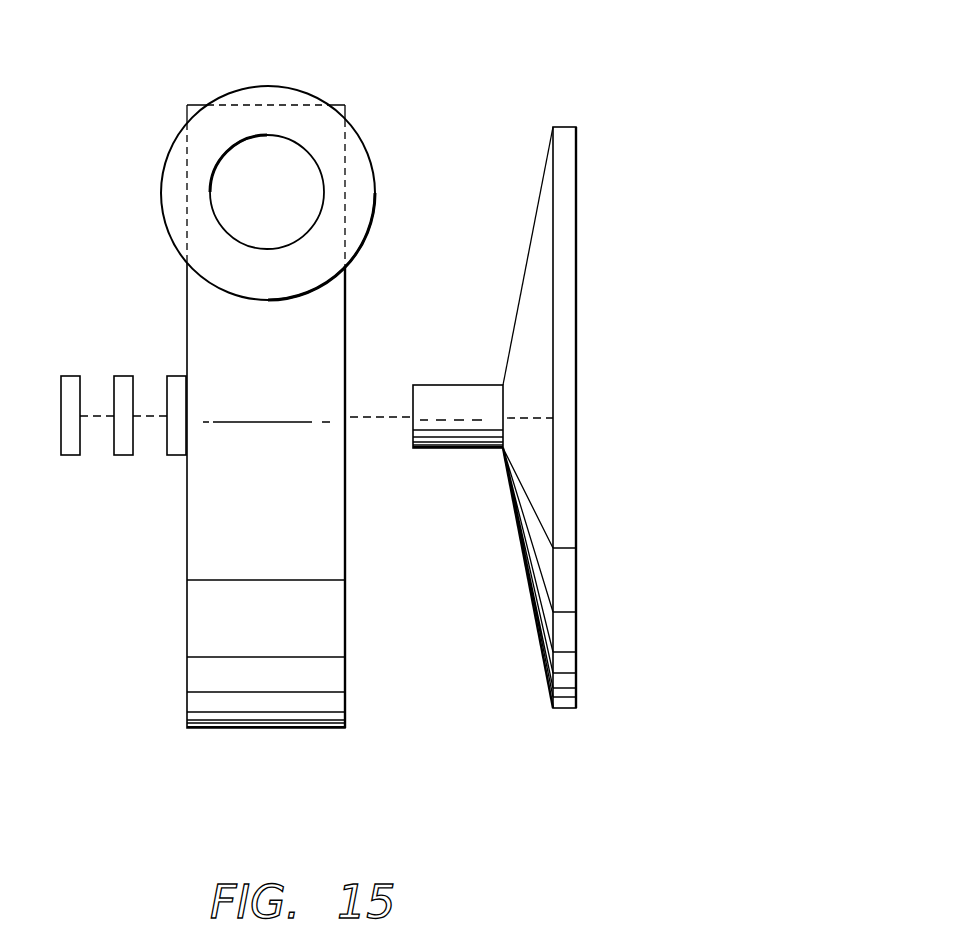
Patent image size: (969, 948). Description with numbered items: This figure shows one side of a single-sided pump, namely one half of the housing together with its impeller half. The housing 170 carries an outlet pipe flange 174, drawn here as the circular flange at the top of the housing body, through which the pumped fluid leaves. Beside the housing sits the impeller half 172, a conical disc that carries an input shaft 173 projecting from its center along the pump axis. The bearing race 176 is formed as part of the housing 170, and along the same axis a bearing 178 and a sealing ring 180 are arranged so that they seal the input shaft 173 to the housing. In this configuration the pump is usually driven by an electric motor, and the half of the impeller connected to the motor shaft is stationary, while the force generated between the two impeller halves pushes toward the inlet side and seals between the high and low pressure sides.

The housing 170 is at (185, 621).
The impeller half 172 is at (578, 338).
The input shaft 173 is at (460, 383).
The outlet pipe flange 174 is at (265, 86).
The bearing race 176 is at (177, 375).
The bearing 178 is at (123, 457).
The sealing ring 180 is at (71, 375).